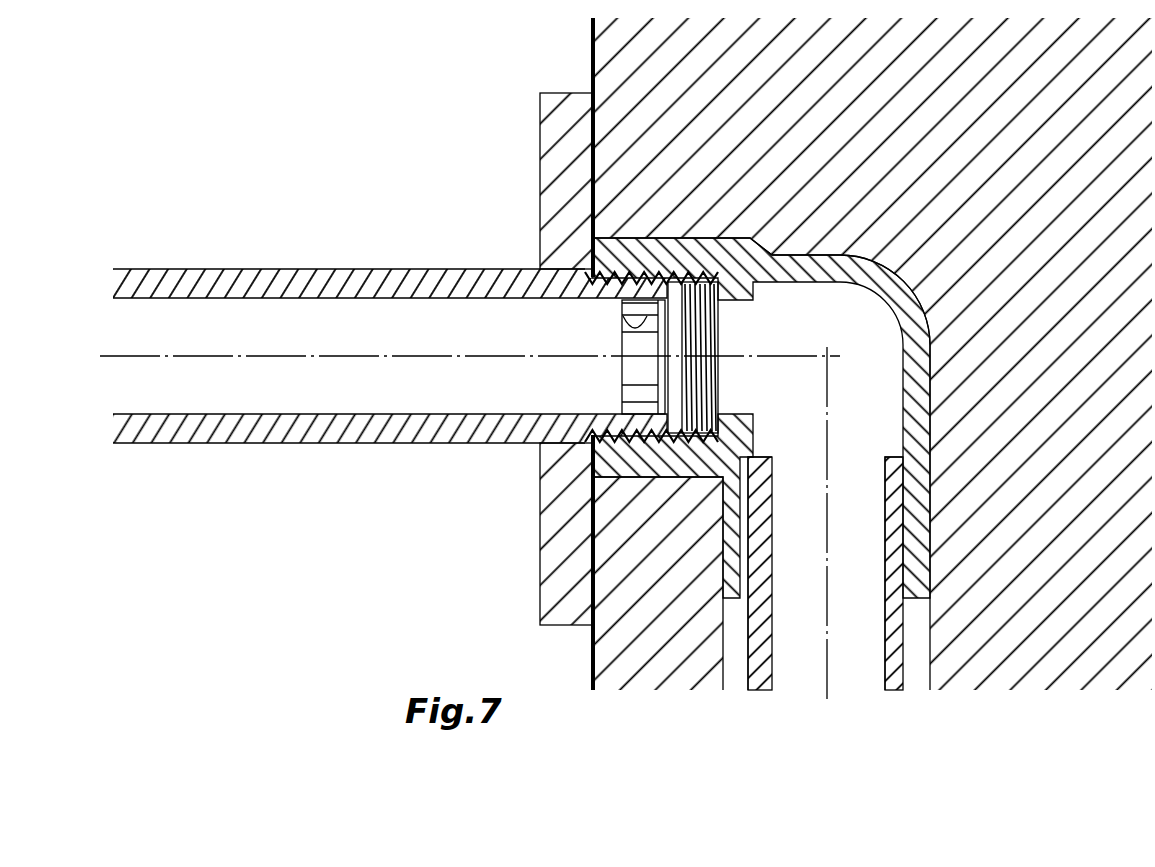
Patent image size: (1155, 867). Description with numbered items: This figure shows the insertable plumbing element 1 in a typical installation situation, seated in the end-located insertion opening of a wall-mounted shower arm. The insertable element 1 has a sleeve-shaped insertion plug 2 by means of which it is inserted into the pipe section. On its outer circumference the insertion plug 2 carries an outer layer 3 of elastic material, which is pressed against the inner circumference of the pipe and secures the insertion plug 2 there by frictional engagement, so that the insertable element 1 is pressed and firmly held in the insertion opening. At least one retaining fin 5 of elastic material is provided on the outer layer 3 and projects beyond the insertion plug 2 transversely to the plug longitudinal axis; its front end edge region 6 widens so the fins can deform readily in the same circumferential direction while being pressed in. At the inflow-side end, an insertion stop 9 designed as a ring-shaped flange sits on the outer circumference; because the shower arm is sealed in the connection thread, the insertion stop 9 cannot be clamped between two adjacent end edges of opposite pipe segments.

The insertable plumbing element 1 is at (787, 327).
The insertion plug 2 is at (600, 318).
The outer layer 3 is at (635, 345).
The retaining fin 5 is at (640, 377).
The end edge region 6 is at (624, 394).
The insertion stop 9 is at (726, 357).